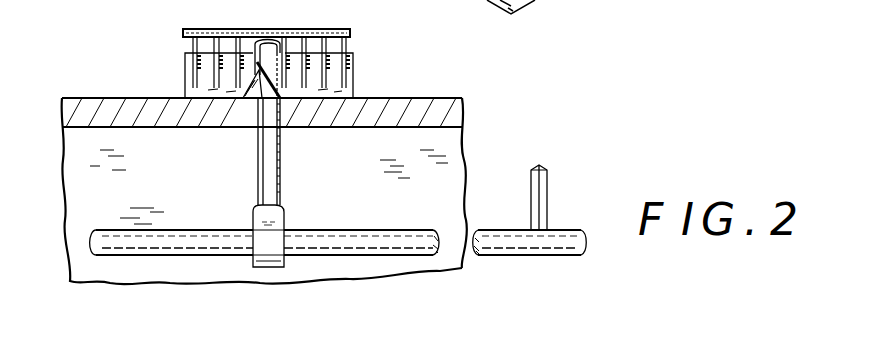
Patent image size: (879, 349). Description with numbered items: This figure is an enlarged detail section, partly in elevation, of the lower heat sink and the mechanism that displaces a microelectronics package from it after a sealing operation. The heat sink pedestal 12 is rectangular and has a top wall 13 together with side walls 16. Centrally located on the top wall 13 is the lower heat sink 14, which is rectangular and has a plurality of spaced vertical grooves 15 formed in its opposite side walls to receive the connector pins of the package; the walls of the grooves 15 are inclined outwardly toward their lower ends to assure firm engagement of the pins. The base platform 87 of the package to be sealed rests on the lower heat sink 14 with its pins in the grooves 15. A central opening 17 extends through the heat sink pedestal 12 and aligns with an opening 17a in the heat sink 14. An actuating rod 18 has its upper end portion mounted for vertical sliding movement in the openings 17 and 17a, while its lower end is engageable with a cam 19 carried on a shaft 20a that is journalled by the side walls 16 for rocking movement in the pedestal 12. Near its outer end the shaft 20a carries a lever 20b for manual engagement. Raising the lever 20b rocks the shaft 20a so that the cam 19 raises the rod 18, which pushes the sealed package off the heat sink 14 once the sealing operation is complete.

The heat sink pedestal 12 is at (473, 167).
The top wall 13 is at (445, 98).
The lower heat sink 14 is at (353, 62).
The vertical grooves 15 is at (195, 79).
The side walls 16 is at (138, 140).
The central opening 17 is at (279, 124).
The opening 17a is at (258, 128).
The actuating rod 18 is at (282, 171).
The cam 19 is at (285, 208).
The shaft 20a is at (372, 231).
The lever 20b is at (548, 190).
The base platform 87 is at (265, 29).